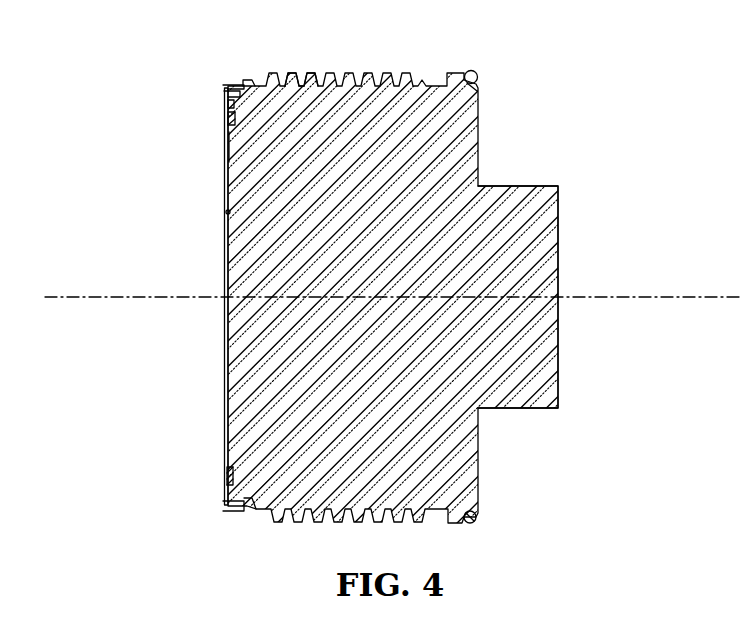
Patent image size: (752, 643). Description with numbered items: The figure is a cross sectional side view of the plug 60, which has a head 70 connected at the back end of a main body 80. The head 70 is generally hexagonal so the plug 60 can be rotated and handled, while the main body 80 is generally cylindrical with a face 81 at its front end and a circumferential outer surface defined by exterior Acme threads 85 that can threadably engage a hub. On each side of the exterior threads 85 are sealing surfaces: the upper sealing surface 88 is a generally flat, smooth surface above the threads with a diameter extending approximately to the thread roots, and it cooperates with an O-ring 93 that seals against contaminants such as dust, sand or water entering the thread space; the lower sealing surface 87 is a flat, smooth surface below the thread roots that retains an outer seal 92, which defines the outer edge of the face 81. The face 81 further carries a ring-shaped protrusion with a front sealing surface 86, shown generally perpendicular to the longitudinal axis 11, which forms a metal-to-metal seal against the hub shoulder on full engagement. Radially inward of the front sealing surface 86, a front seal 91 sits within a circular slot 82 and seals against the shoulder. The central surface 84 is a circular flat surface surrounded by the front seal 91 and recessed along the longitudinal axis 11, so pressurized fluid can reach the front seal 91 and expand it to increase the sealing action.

The longitudinal axis 11 is at (75, 297).
The plug 60 is at (376, 272).
The head 70 is at (538, 222).
The main body 80 is at (386, 110).
The face 81 is at (184, 277).
The circular slot 82 is at (231, 145).
The central surface 84 is at (227, 212).
The exterior Acme threads 85 is at (303, 73).
The front sealing surface 86 is at (226, 103).
The lower sealing surface 87 is at (227, 95).
The upper sealing surface 88 is at (473, 87).
The front seal 91 is at (231, 120).
The outer seal 92 is at (232, 85).
The O-ring 93 is at (477, 73).